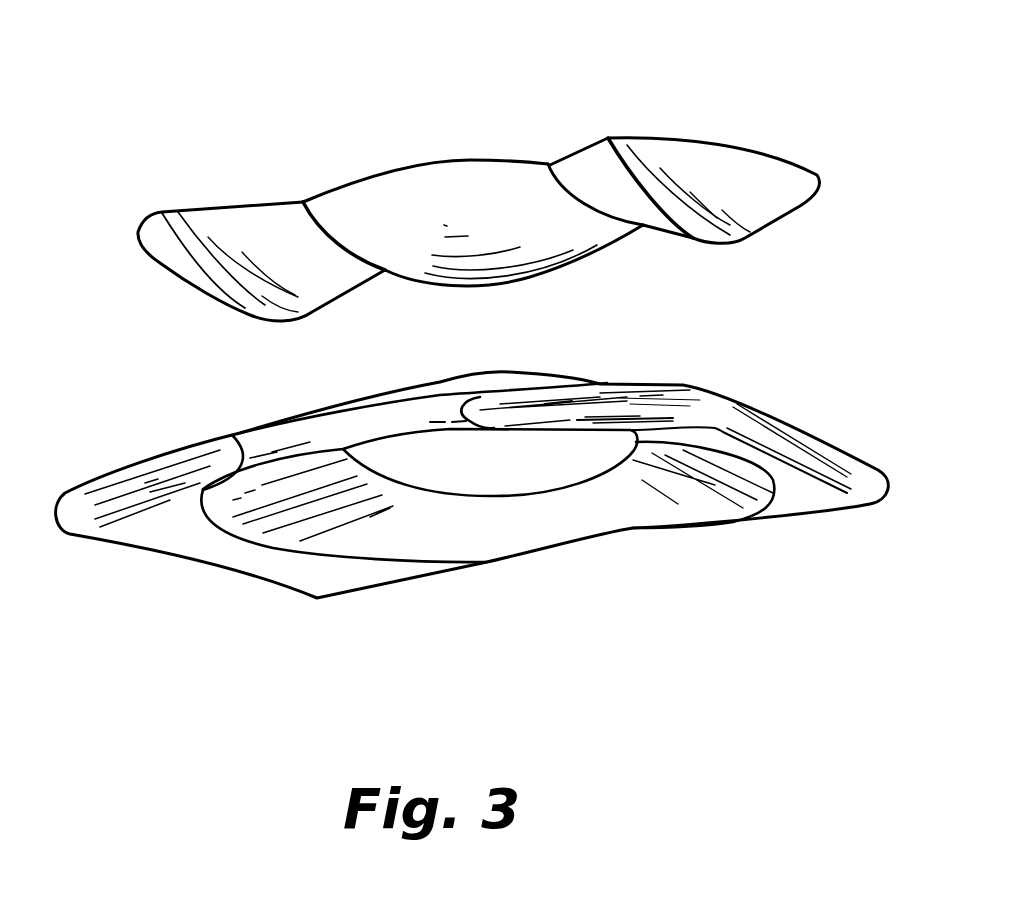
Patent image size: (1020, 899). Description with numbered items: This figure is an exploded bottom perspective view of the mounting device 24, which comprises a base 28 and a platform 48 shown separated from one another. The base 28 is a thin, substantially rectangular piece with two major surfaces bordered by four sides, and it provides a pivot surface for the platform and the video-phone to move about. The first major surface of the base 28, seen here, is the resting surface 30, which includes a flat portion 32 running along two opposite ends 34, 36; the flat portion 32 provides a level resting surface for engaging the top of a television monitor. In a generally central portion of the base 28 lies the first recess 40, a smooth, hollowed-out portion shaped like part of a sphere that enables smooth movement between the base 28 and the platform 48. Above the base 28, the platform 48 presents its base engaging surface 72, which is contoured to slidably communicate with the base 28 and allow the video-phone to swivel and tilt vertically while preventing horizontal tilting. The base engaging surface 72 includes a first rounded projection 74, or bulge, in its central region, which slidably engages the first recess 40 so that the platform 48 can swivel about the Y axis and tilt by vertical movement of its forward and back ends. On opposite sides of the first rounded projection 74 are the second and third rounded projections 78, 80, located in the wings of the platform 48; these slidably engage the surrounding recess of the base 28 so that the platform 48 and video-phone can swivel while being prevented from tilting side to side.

The mounting device 24 is at (183, 99).
The base 28 is at (829, 382).
The resting surface 30 is at (473, 588).
The flat portion 32 is at (338, 578).
The end 34 is at (853, 452).
The end 36 is at (152, 547).
The first recess 40 is at (486, 371).
The platform 48 is at (772, 126).
The base engaging surface 72 is at (598, 270).
The first rounded projection 74 is at (430, 258).
The second rounded projection 78 is at (258, 296).
The third rounded projection 80 is at (750, 222).